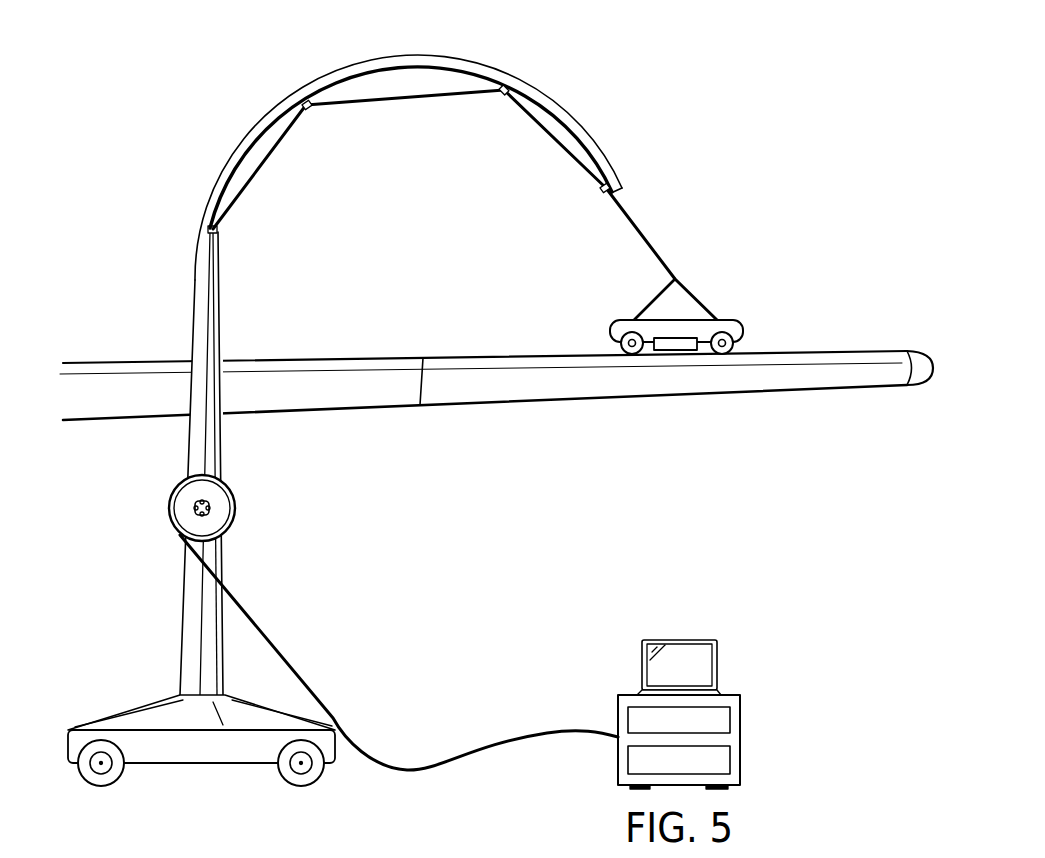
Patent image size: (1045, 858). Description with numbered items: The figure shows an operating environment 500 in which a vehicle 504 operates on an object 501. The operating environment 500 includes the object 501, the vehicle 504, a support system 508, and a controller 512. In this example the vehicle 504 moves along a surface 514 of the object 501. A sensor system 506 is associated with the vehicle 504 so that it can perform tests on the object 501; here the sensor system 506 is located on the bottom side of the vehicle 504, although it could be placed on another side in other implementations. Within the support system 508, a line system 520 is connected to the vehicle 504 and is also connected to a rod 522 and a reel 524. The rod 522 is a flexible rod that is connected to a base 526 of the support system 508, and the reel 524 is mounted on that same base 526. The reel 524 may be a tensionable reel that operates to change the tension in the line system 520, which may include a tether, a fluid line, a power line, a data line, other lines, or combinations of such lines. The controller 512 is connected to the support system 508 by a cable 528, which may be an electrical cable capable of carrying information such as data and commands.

The operating environment 500 is at (104, 88).
The object 501 is at (106, 368).
The vehicle 504 is at (743, 333).
The sensor system 506 is at (678, 350).
The support system 508 is at (124, 258).
The controller 512 is at (742, 741).
The surface 514 is at (453, 357).
The line system 520 is at (688, 232).
The rod 522 is at (392, 57).
The reel 524 is at (170, 505).
The base 526 is at (130, 712).
The cable 528 is at (313, 656).